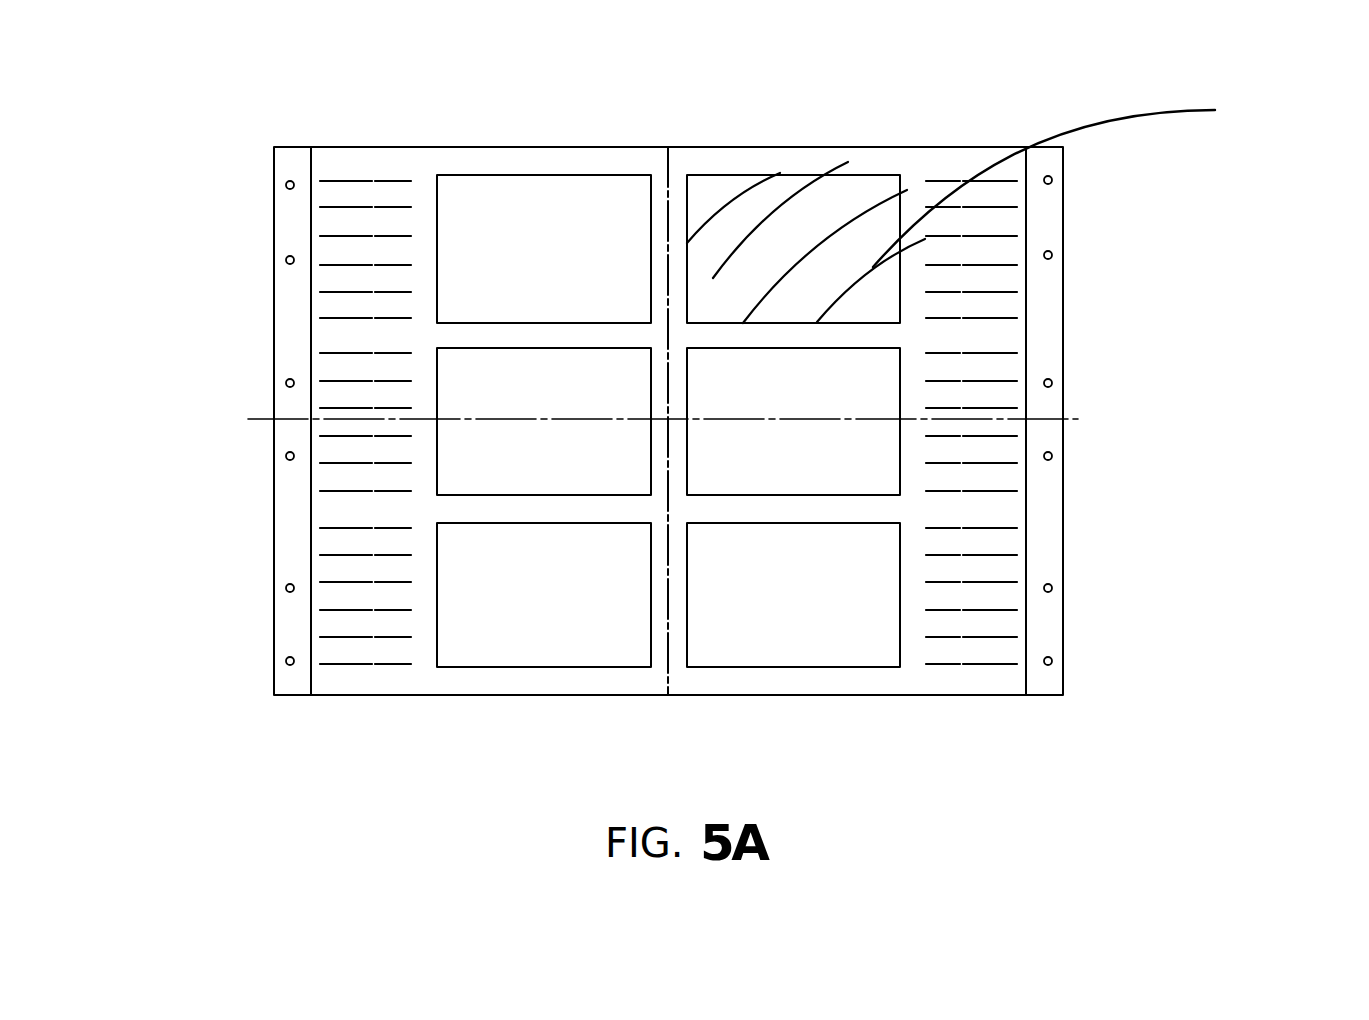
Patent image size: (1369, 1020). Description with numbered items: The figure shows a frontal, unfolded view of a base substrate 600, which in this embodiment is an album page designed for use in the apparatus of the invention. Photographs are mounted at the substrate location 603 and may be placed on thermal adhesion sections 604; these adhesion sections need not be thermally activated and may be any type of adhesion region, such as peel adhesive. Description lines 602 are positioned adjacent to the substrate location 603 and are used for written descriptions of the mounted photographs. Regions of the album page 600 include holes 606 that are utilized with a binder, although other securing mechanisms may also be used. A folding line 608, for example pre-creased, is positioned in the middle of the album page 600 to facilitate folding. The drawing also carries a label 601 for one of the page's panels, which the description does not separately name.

The base substrate 600 is at (262, 322).
The card blank 601 is at (540, 190).
The description lines 602 is at (977, 207).
The substrate location 603 is at (780, 228).
The thermal adhesion sections 604 is at (1106, 182).
The holes 606 is at (1057, 383).
The folding line 608 is at (670, 195).